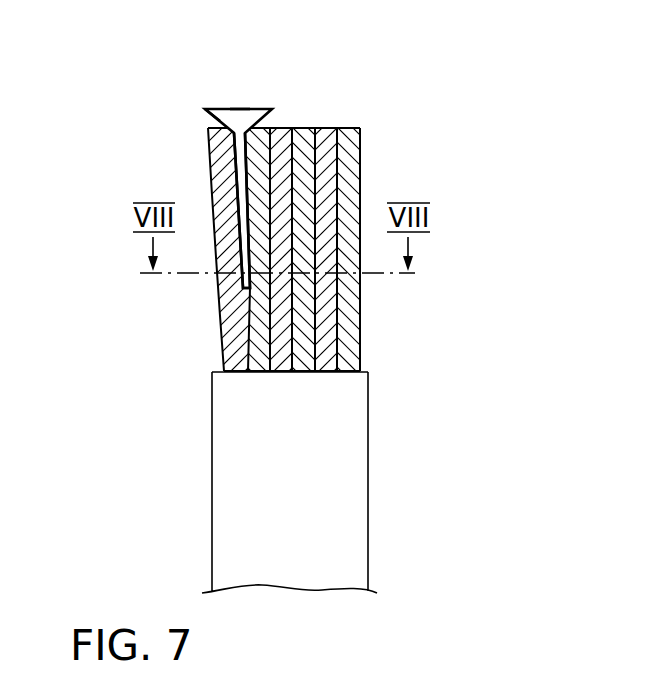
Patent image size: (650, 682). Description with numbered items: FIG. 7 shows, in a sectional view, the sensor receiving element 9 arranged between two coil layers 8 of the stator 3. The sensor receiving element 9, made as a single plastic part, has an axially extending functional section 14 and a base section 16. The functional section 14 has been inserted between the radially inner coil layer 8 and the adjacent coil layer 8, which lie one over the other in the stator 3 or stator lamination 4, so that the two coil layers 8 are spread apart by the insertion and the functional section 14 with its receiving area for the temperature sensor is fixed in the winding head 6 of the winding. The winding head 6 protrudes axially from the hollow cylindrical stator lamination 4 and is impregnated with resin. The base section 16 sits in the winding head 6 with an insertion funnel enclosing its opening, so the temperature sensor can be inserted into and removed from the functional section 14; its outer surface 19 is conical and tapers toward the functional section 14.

The stator 3 is at (293, 300).
The stator lamination 4 is at (367, 433).
The winding head 6 is at (291, 242).
The coil layer 8 is at (218, 147).
The sensor receiving element 9 is at (191, 152).
The functional section 14 is at (242, 187).
The base section 16 is at (240, 115).
The outer surface 19 is at (192, 122).